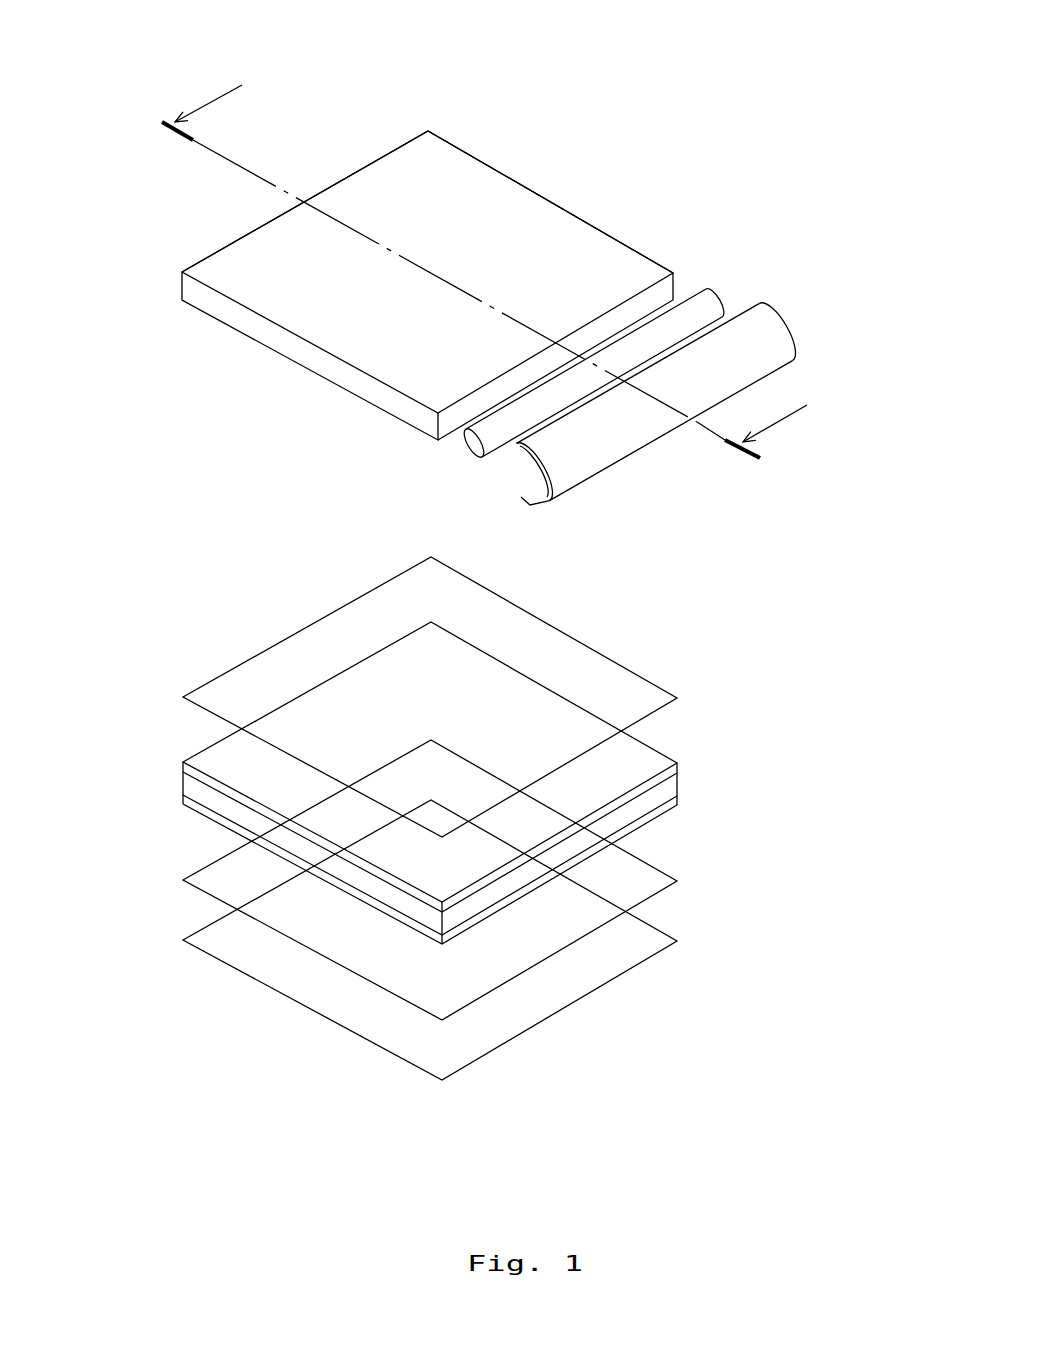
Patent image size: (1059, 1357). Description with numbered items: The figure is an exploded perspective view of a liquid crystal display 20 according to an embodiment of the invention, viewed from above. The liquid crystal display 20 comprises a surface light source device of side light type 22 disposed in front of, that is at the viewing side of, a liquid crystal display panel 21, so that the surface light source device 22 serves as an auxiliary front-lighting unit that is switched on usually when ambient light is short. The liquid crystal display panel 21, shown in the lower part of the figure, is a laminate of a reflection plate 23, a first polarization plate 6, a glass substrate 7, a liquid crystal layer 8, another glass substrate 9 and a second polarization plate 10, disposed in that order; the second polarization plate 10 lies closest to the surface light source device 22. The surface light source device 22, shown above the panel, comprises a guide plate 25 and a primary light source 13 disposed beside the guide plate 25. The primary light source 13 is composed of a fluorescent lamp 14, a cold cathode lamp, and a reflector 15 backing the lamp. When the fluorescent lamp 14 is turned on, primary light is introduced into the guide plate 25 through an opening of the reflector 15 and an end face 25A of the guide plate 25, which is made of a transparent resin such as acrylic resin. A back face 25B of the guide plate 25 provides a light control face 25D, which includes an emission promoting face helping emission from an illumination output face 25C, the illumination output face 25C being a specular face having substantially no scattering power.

The liquid crystal display 20 is at (66, 1253).
The liquid crystal display panel 21 is at (415, 847).
The surface light source device of side light type 22 is at (300, 28).
The guide plate 25 is at (463, 268).
The end face 25A is at (605, 326).
The back face 25B is at (453, 170).
The illumination output face 25C is at (310, 373).
The light control face 25D is at (427, 249).
The primary light source 13 is at (554, 446).
The fluorescent lamp 14 is at (518, 381).
The reflector 15 is at (656, 413).
The second polarization plate 10 is at (465, 697).
The glass substrate 9 is at (460, 767).
The liquid crystal layer 8 is at (460, 845).
The glass substrate 7 is at (460, 869).
The first polarization plate 6 is at (460, 880).
The reflection plate 23 is at (466, 940).